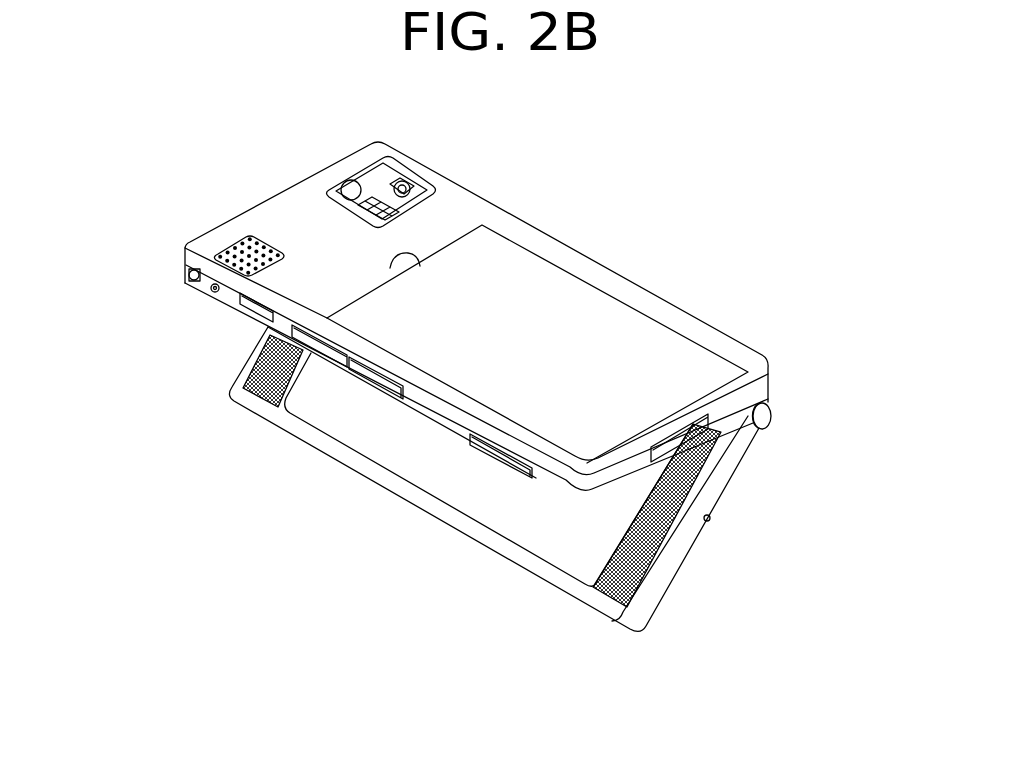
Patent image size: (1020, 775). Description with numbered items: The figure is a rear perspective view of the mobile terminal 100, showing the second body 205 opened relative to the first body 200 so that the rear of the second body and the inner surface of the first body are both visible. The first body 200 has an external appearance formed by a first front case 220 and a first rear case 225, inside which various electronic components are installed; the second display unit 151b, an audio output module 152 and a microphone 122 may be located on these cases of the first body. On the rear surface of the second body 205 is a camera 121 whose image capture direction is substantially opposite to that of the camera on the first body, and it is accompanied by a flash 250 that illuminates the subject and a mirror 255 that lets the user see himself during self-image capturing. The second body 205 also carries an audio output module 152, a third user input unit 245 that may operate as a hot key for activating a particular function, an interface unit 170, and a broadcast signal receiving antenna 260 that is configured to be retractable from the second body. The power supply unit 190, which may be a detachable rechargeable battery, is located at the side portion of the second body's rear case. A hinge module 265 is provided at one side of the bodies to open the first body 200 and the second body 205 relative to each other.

The mobile terminal 100 is at (627, 183).
The second body 205 is at (238, 209).
The first body 200 is at (392, 500).
The power supply unit 190 is at (647, 332).
The camera 121 is at (396, 186).
The mirror 255 is at (350, 187).
The flash 250 is at (347, 218).
The audio output module 152 is at (235, 247).
The broadcast signal receiving antenna 260 is at (193, 273).
The third user input unit 245 is at (377, 383).
The interface unit 170 is at (503, 470).
The second display unit 151b is at (553, 542).
The hinge module 265 is at (770, 417).
The microphone 122 is at (711, 520).
The first rear case 225 is at (670, 562).
The first front case 220 is at (657, 603).